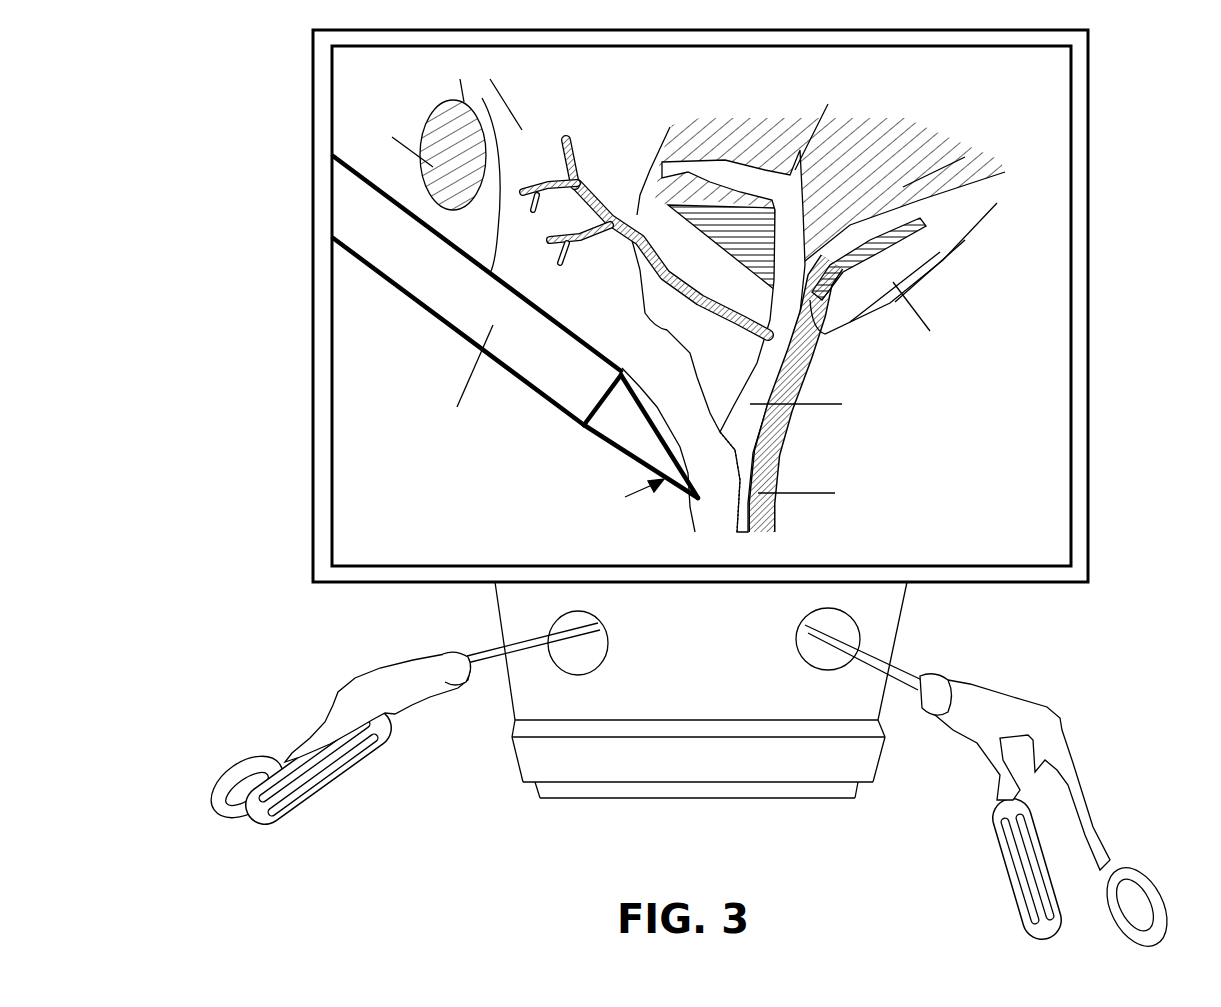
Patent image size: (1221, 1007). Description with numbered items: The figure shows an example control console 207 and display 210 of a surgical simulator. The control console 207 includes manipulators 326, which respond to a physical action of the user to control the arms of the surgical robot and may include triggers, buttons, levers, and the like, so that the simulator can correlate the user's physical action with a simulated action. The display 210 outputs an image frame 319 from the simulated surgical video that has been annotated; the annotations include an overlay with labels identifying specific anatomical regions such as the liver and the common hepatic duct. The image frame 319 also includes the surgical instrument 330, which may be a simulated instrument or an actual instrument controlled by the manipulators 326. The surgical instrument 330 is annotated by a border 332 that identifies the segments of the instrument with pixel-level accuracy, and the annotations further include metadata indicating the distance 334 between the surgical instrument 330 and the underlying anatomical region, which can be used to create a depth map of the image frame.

The display 210 is at (313, 95).
The image frame 319 is at (1058, 85).
The surgical instrument 330 is at (355, 210).
The border 332 is at (373, 262).
The distance 334 is at (428, 500).
The control console 207 is at (701, 690).
The manipulators 326 is at (218, 780).